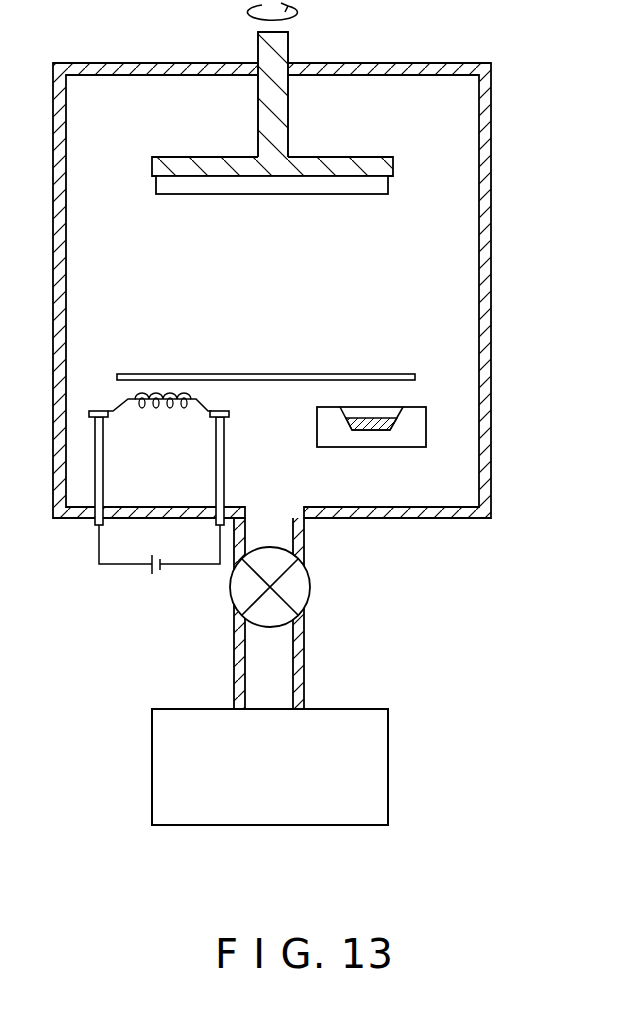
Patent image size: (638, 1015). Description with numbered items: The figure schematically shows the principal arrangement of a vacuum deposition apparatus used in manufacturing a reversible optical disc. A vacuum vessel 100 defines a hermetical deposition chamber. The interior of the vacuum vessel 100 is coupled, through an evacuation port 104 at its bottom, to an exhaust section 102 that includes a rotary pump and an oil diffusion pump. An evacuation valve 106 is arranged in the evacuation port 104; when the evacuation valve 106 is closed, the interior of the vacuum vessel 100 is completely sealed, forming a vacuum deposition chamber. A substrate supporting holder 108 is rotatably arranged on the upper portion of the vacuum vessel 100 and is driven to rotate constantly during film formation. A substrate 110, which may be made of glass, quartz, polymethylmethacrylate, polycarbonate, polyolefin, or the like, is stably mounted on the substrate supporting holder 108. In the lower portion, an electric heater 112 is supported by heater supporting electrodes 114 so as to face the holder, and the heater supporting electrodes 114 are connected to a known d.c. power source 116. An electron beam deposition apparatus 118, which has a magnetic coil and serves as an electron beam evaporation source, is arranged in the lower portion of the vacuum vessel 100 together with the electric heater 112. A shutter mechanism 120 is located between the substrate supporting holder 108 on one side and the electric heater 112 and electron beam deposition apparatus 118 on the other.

The vacuum vessel 100 is at (492, 323).
The exhaust section 102 is at (384, 800).
The evacuation port 104 is at (304, 669).
The evacuation valve 106 is at (302, 567).
The substrate supporting holder 108 is at (288, 38).
The substrate 110 is at (365, 186).
The electric heater 112 is at (165, 419).
The heater supporting electrodes 114 is at (224, 480).
The d.c. power source 116 is at (148, 577).
The electron beam deposition apparatus 118 is at (375, 452).
The shutter mechanism 120 is at (349, 373).